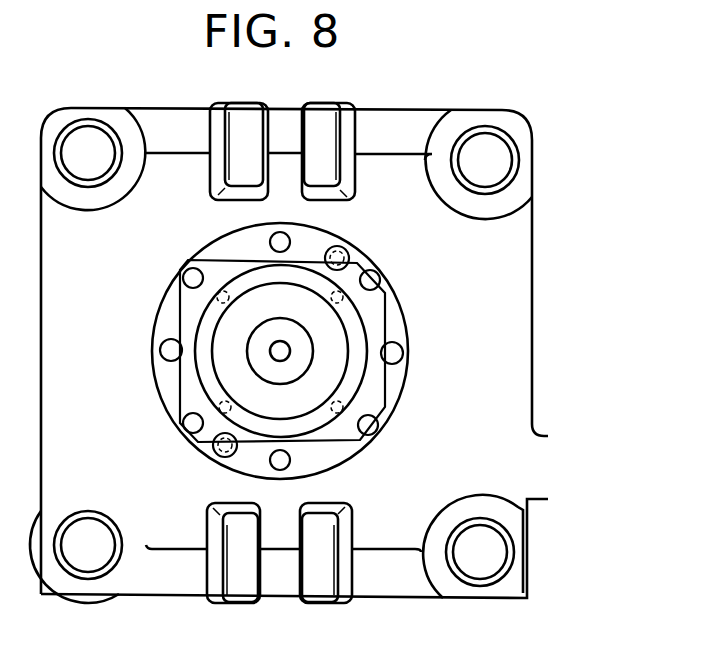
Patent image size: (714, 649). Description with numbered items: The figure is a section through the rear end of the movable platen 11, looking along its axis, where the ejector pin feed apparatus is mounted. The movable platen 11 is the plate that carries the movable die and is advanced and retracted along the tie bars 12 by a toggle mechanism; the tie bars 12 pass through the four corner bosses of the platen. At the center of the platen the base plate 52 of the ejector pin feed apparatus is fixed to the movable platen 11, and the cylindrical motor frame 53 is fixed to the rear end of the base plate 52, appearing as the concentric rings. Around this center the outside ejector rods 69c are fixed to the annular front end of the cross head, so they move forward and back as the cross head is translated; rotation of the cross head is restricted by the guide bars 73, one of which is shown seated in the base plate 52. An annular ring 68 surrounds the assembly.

The movable platen 11 is at (532, 278).
The tie bars 12 is at (505, 143).
The base plate 52 is at (373, 307).
The motor frame 53 is at (360, 390).
The flange ring 68 is at (407, 380).
The outside ejector rods 69c is at (410, 355).
The guide bars 73 is at (348, 252).